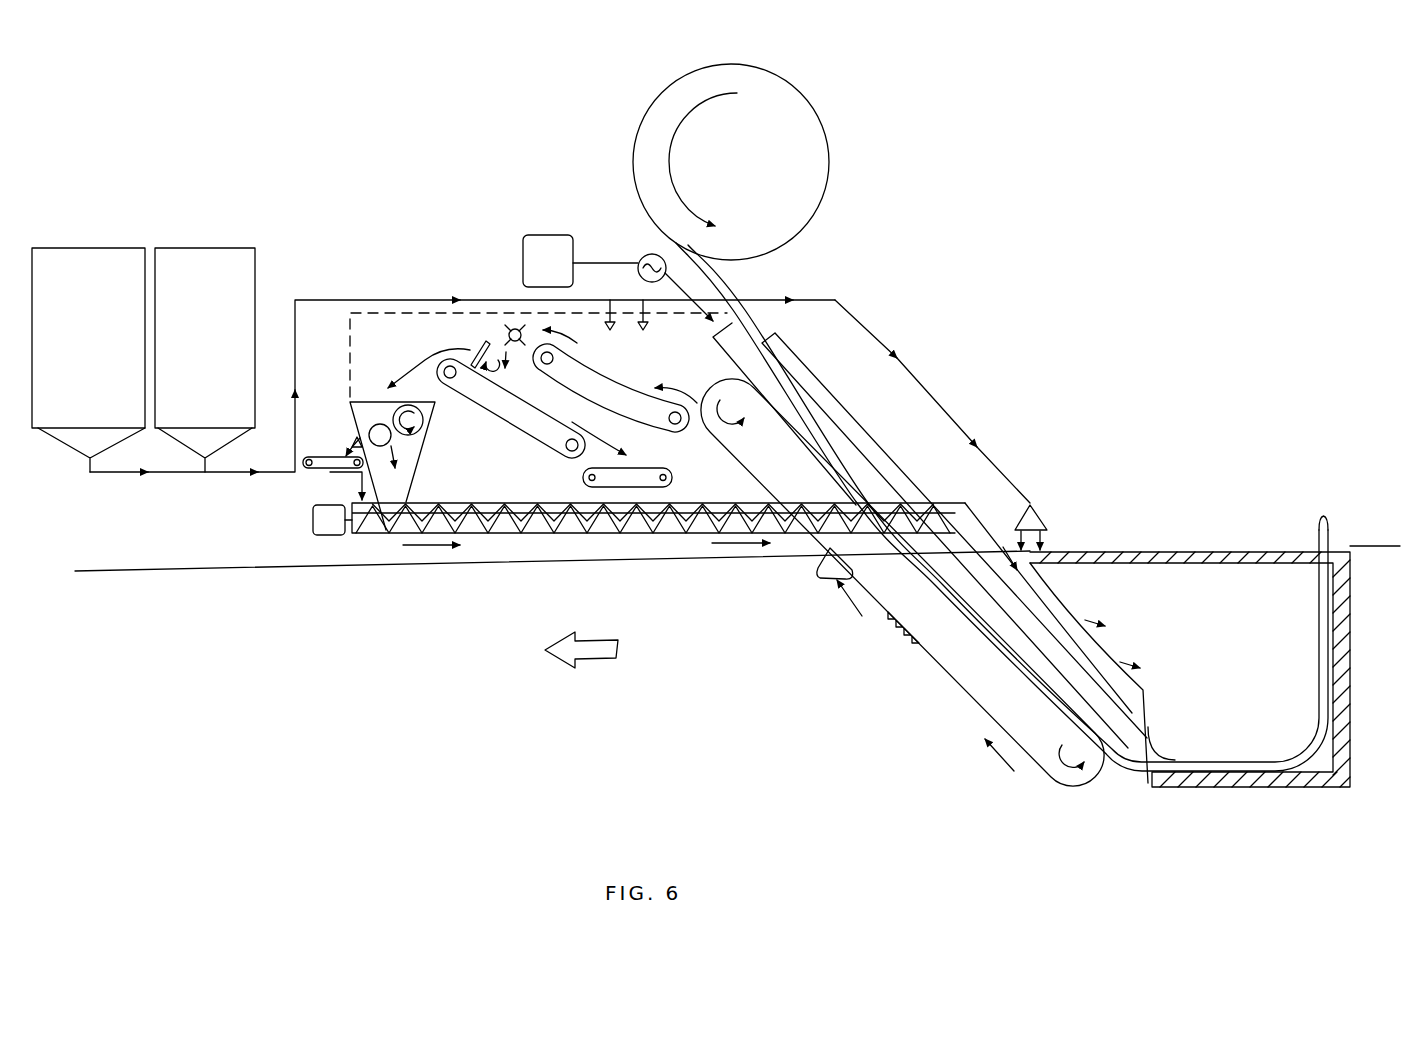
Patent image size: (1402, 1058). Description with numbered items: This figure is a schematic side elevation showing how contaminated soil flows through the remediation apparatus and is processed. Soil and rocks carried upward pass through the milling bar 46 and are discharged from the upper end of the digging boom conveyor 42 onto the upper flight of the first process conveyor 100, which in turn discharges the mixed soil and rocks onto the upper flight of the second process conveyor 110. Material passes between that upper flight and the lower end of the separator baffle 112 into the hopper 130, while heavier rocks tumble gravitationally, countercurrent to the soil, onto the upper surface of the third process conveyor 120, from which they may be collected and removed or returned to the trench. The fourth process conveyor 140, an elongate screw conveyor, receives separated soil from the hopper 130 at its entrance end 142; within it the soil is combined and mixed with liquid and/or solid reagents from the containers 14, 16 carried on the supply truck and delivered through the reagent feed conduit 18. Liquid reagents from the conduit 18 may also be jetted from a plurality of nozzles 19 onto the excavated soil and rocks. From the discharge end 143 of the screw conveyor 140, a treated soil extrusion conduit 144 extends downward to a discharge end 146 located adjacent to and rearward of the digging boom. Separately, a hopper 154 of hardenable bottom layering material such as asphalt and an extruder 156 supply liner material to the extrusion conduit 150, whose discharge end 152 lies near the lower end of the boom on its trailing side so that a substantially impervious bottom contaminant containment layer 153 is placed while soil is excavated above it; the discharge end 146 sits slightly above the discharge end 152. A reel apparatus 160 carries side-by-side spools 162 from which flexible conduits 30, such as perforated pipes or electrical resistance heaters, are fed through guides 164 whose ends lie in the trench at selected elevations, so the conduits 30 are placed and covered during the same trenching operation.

The container of treatment reagents 14 is at (86, 352).
The container of treatment reagents 16 is at (208, 352).
The reagent feed conduit 18 is at (228, 473).
The nozzles 19 is at (615, 330).
The flexible conduit 30 is at (735, 292).
The digging boom conveyor 42 is at (898, 648).
The milling bar 46 is at (825, 564).
The first process conveyor 100 is at (582, 378).
The second process conveyor 110 is at (503, 412).
The separator baffle 112 is at (478, 355).
The third process conveyor 120 is at (635, 470).
The hopper 130 is at (402, 490).
The fourth process conveyor 140 is at (460, 504).
The entrance end 142 is at (398, 503).
The discharge end 143 is at (985, 480).
The treated soil extrusion conduit 144 is at (1117, 653).
The discharge end 146 is at (1143, 700).
The extrusion conduit 150 is at (1005, 630).
The discharge end 152 is at (1180, 747).
The bottom contaminant containment layer 153 is at (1248, 787).
The hopper 154 is at (580, 261).
The extruder 156 is at (645, 258).
The reel apparatus 160 is at (832, 128).
The spools 162 is at (643, 138).
The guides 164 is at (812, 370).